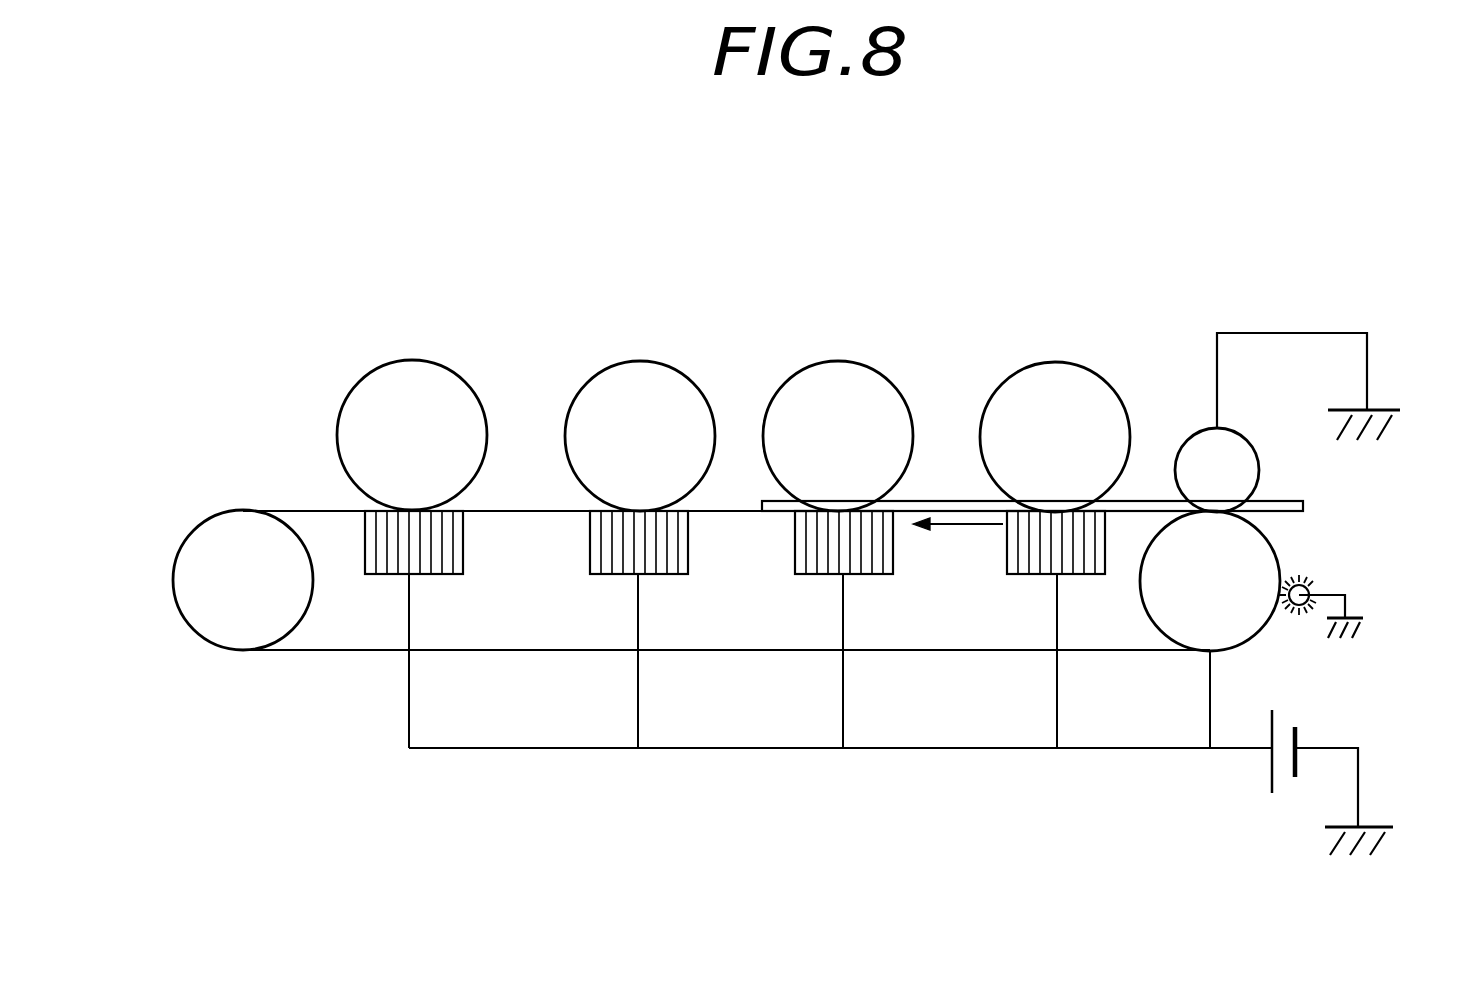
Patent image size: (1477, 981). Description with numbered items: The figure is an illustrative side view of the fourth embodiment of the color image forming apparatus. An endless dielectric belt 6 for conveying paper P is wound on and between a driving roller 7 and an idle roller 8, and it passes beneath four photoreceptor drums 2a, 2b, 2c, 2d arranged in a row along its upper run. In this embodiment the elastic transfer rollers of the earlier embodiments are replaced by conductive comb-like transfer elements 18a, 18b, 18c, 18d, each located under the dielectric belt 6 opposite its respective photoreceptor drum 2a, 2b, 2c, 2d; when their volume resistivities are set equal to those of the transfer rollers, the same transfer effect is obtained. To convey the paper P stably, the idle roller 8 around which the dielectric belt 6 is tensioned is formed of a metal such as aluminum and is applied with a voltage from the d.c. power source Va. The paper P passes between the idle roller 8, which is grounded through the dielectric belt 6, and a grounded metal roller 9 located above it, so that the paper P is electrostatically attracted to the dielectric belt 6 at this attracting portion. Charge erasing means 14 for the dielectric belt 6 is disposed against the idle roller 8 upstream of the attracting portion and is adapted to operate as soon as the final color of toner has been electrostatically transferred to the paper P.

The photoreceptor drum 2a is at (1073, 377).
The photoreceptor drum 2b is at (865, 377).
The photoreceptor drum 2c is at (663, 377).
The photoreceptor drum 2d is at (437, 385).
The conductive comb-like transfer element 18a is at (1007, 555).
The conductive comb-like transfer element 18b is at (795, 550).
The conductive comb-like transfer element 18c is at (590, 550).
The conductive comb-like transfer element 18d is at (365, 555).
The endless dielectric belt 6 is at (317, 650).
The driving roller 7 is at (218, 618).
The idle roller 8 is at (1222, 625).
The metal roller 9 is at (1228, 452).
The charge erasing means 14 is at (1322, 573).
The paper P is at (1303, 512).
The d.c. power source Va is at (1263, 777).